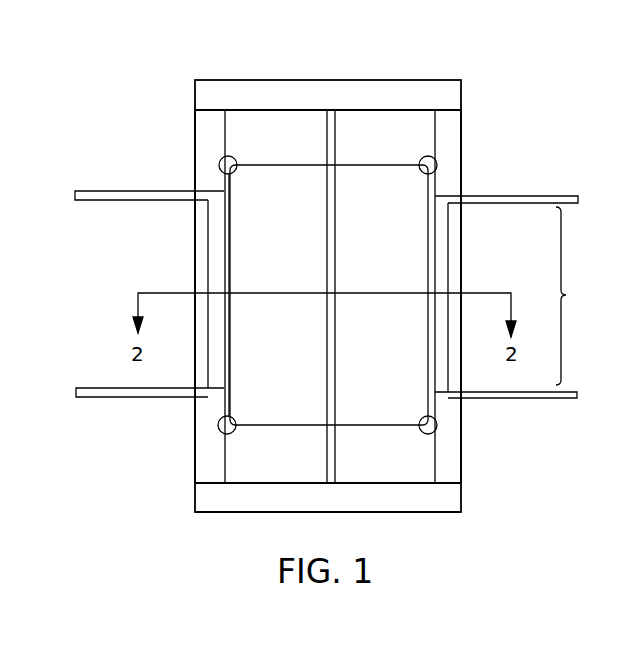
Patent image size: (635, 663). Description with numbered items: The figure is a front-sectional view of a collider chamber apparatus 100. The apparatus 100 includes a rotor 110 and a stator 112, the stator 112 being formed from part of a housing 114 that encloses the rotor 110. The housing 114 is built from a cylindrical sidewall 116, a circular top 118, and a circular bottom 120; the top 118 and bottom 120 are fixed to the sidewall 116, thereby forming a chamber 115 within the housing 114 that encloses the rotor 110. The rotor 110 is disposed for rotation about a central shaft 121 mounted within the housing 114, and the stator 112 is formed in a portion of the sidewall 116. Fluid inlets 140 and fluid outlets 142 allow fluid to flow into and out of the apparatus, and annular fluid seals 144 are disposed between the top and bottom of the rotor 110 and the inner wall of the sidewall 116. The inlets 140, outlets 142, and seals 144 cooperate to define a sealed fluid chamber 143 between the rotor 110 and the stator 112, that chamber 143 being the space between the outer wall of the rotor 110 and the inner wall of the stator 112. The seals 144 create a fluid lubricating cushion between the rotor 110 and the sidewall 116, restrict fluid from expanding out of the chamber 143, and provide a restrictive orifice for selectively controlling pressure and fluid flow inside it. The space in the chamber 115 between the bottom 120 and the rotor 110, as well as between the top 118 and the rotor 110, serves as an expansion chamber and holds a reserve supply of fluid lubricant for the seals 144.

The collider chamber apparatus 100 is at (83, 493).
The rotor 110 is at (357, 428).
The stator 112 is at (583, 296).
The housing 114 is at (428, 515).
The chamber 115 is at (317, 475).
The cylindrical sidewall 116 is at (195, 442).
The circular top 118 is at (397, 80).
The circular bottom 120 is at (227, 512).
The central shaft 121 is at (335, 227).
The fluid inlets 140 is at (108, 398).
The fluid outlets 142 is at (100, 190).
The sealed fluid chamber 143 is at (430, 190).
The annular fluid seals 144 is at (233, 157).